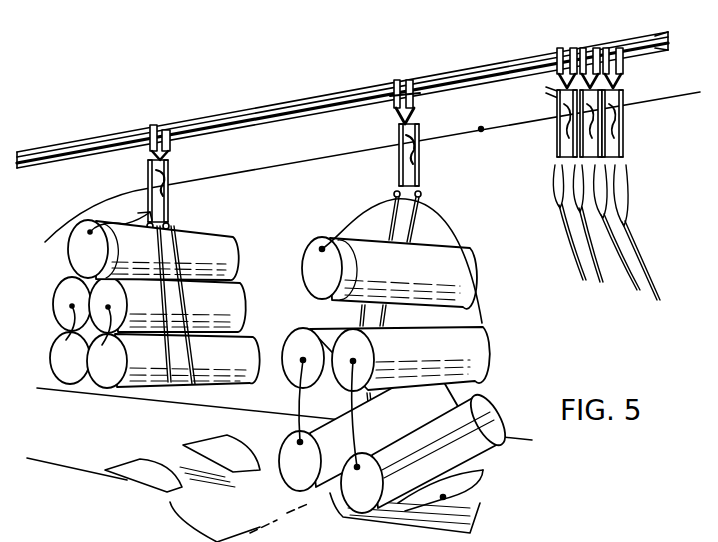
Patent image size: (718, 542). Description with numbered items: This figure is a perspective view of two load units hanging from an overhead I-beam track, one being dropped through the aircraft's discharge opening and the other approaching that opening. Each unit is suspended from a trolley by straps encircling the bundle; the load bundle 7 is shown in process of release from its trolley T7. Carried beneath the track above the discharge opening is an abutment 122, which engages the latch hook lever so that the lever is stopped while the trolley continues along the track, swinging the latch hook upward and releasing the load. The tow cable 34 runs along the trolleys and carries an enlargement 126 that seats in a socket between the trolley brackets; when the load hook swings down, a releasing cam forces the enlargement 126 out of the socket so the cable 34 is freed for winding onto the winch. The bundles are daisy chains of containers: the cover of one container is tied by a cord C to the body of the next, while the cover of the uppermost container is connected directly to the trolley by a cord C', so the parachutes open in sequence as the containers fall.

The abutment 122 is at (395, 108).
The enlargement 126 is at (488, 108).
The cable 34 is at (311, 158).
The trolley T7 is at (427, 158).
The load bundle 7 is at (450, 240).
The cord C' is at (400, 261).
The cord C is at (332, 414).